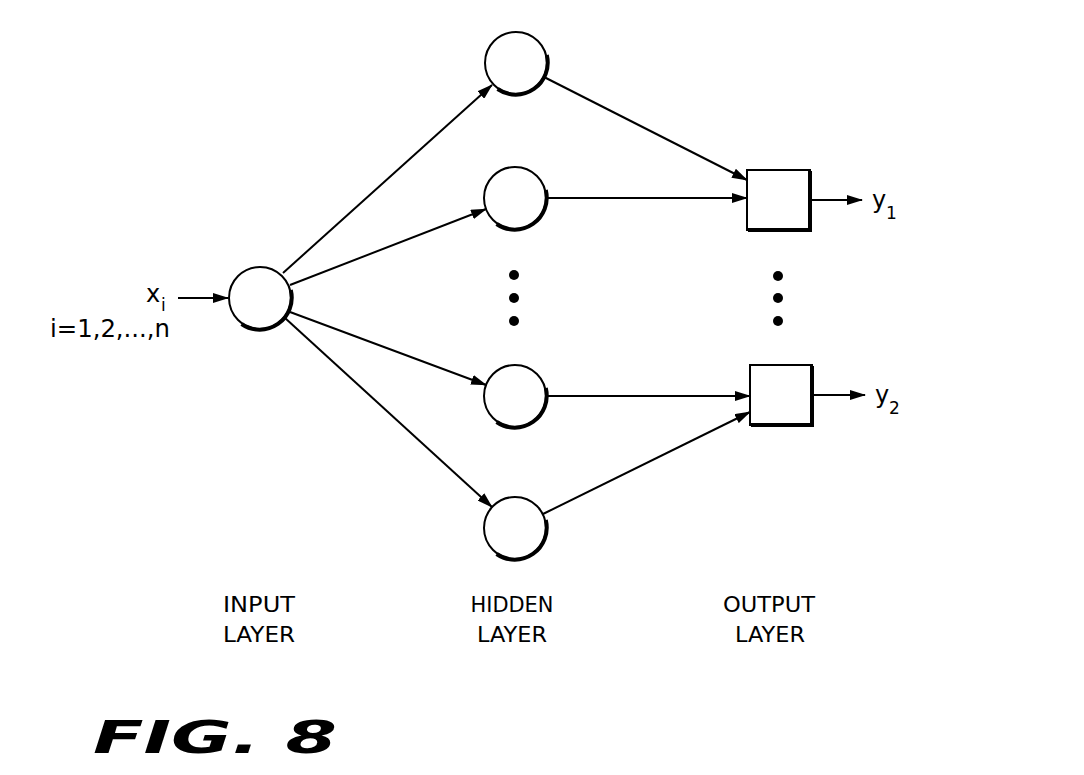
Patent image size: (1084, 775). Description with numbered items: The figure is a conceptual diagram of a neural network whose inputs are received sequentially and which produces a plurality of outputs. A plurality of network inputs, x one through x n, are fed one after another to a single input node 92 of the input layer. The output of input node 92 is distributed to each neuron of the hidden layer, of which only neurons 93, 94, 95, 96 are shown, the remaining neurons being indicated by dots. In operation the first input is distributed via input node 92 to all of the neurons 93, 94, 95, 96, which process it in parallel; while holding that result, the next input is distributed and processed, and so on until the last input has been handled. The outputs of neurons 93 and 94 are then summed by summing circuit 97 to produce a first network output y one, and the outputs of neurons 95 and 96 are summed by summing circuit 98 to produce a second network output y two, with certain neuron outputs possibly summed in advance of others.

The input node 92 is at (237, 273).
The neuron 93 is at (536, 33).
The neuron 94 is at (533, 168).
The neuron 95 is at (533, 366).
The neuron 96 is at (521, 496).
The summing circuit 97 is at (790, 168).
The summing circuit 98 is at (790, 427).